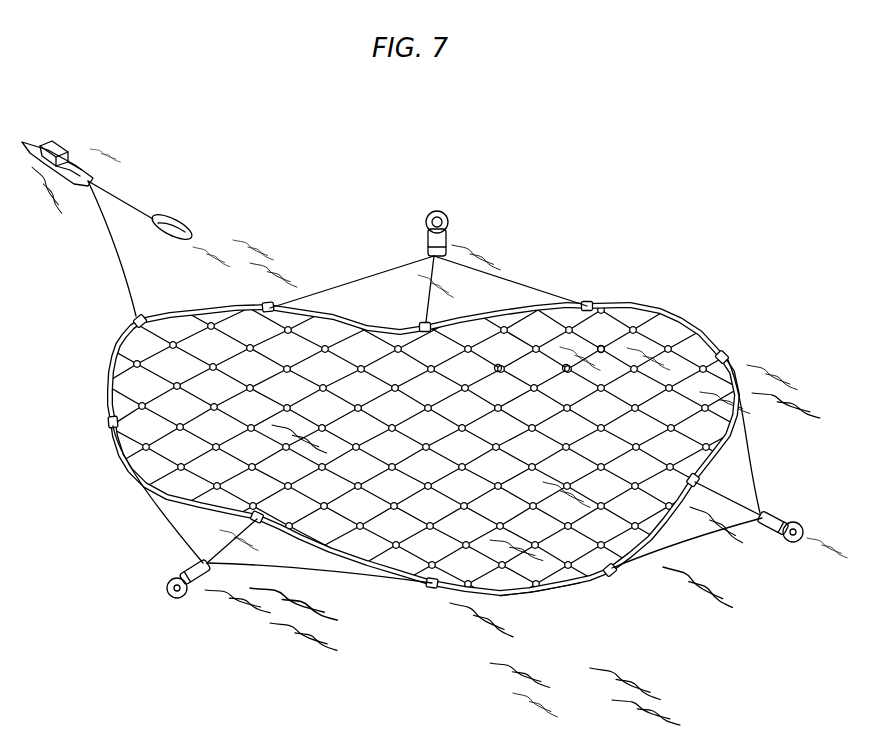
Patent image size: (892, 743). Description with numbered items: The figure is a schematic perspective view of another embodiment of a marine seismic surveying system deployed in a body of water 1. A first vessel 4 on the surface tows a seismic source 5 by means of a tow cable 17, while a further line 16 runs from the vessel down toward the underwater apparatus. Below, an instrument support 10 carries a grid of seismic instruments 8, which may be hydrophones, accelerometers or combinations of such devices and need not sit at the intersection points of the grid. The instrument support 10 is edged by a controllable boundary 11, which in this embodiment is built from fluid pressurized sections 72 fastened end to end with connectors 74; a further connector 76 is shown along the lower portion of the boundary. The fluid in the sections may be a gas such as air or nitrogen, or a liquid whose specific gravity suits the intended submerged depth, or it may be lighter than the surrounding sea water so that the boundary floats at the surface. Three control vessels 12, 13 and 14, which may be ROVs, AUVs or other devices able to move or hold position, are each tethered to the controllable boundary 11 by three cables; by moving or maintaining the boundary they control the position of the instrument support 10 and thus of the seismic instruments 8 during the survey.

The body of water 1 is at (553, 705).
The first vessel 4 is at (50, 143).
The seismic source 5 is at (177, 220).
The seismic instruments 8 is at (500, 364).
The instrument support 10 is at (608, 330).
The controllable boundary 11 is at (684, 316).
The control vessel 12 is at (186, 570).
The control vessel 13 is at (778, 514).
The control vessel 14 is at (428, 235).
The tow line 16 is at (120, 268).
The tow cable 17 is at (135, 205).
The fluid pressurized sections 72 is at (553, 593).
The connectors 74 is at (430, 590).
The bottom clip 76 is at (612, 575).